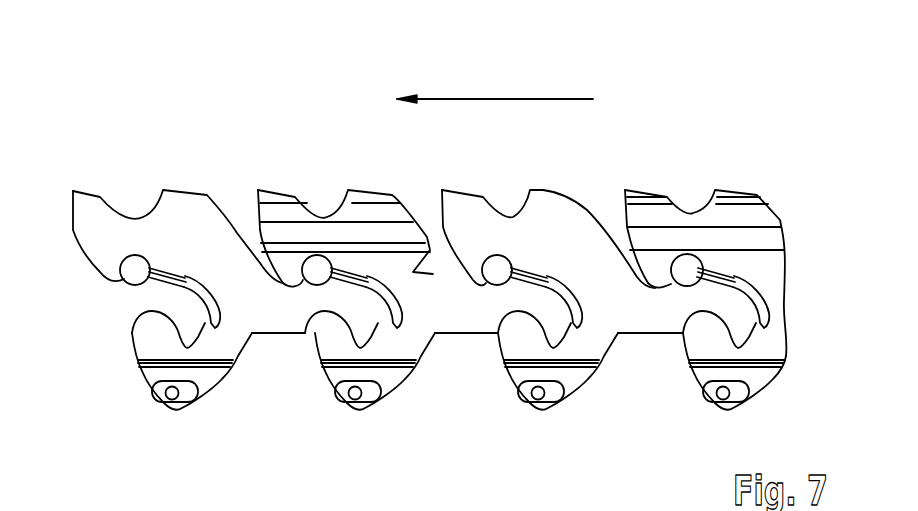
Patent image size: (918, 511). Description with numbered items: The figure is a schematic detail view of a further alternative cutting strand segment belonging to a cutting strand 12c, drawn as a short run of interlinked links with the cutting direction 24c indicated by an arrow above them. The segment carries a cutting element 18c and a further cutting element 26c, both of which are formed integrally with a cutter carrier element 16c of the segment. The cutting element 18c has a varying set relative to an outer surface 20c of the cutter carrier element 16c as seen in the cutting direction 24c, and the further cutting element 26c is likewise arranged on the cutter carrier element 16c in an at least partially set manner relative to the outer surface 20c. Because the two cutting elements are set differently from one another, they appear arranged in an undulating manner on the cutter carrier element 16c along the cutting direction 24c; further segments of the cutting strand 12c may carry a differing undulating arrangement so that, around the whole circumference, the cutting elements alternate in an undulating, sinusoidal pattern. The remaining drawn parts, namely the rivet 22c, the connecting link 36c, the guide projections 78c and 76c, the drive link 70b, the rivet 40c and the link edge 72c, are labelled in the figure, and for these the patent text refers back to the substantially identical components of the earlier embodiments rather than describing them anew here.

The cutting strand 12c is at (714, 110).
The cutting direction 24c is at (498, 98).
The cutting element 18c is at (259, 189).
The rivet / connecting bolt 22c is at (309, 258).
The further cutting element 26c is at (351, 190).
The outer surface 20c is at (430, 250).
The connecting link 36c is at (533, 297).
The guide projection 78c is at (570, 290).
The guide projection 76c is at (357, 331).
The drive link 70b is at (367, 425).
The rivet 40c is at (337, 380).
The cutter carrier element 16c is at (417, 361).
The drive link edge 72c is at (417, 362).